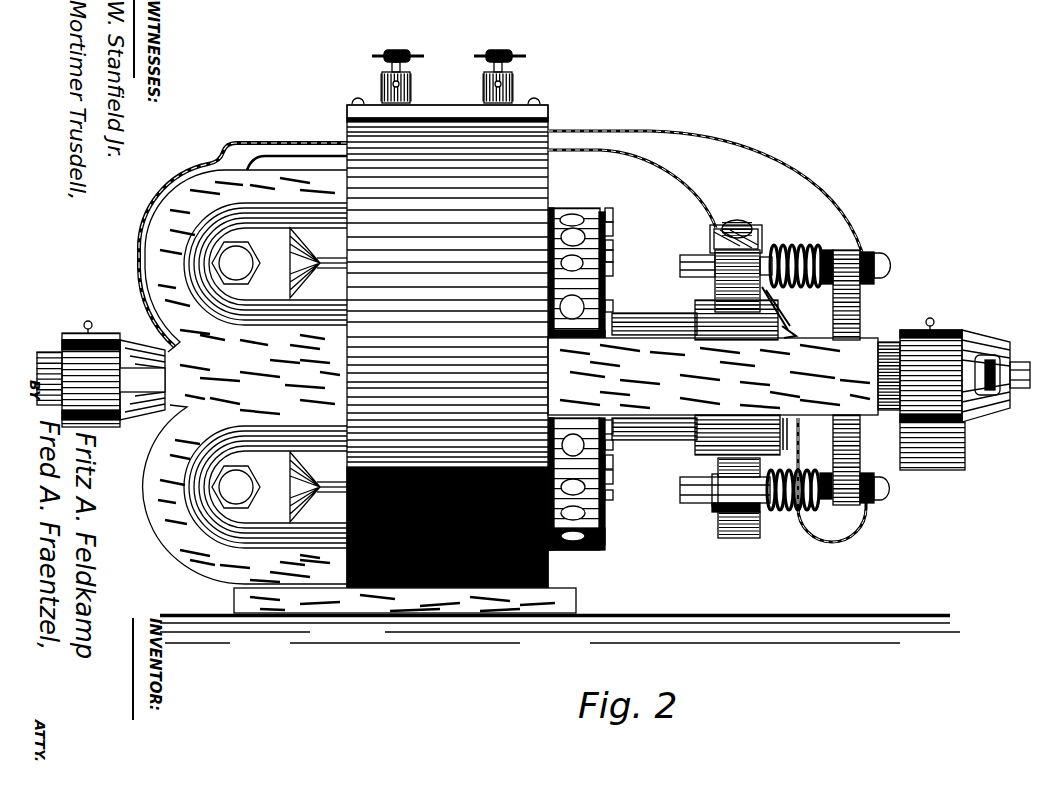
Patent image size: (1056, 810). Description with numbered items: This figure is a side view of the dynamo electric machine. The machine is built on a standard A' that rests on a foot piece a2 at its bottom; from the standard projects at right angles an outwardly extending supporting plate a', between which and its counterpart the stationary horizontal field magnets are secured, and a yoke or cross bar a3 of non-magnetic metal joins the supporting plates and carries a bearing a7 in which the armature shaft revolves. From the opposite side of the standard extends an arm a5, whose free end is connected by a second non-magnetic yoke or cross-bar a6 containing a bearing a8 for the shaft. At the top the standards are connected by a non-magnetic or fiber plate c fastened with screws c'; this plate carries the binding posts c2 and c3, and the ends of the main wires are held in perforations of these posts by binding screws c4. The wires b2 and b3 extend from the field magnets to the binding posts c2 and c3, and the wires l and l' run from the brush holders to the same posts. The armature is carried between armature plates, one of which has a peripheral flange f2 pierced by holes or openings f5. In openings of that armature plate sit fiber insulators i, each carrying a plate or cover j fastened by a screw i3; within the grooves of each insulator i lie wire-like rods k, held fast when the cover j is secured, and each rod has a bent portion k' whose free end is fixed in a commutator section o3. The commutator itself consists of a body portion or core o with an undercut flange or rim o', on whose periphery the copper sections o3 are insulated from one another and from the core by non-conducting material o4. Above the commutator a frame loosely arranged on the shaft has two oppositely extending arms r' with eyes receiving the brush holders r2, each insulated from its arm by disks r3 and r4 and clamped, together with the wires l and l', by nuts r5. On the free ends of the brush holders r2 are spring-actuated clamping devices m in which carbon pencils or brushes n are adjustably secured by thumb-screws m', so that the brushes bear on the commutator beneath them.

The standard A' is at (447, 346).
The supporting plate a' is at (249, 380).
The foot piece a2 is at (577, 602).
The yoke or cross bar a3 is at (101, 380).
The arm a5 is at (713, 376).
The yoke or cross-bar a6 is at (921, 394).
The bearing a7 is at (62, 345).
The bearing a8 is at (990, 415).
The wire b2 is at (298, 155).
The wire b3 is at (185, 157).
The non-magnetic or fiber plate c is at (447, 101).
The screw c' is at (451, 90).
The binding post c2 is at (412, 88).
The binding post c3 is at (488, 87).
The binding screw c4 is at (412, 75).
The peripheral flange f2 is at (600, 212).
The holes or openings f5 is at (573, 212).
The insulator i is at (613, 233).
The screw i3 is at (613, 244).
The plate or cover j is at (613, 215).
The wire-like rod k is at (621, 281).
The bent portion k' is at (654, 374).
The wire l is at (705, 188).
The wire l' is at (707, 363).
The spring-actuated clamping device m is at (744, 383).
The thumb-screw m' is at (741, 215).
The brush n is at (738, 548).
The body portion or core o is at (728, 369).
The undercut flange or rim o' is at (789, 371).
The commutator section o3 is at (758, 340).
The non-conducting material o4 is at (720, 340).
The arm r' is at (857, 377).
The brush holder r2 is at (700, 255).
The insulating disk r3 is at (868, 252).
The insulating disk r4 is at (828, 250).
The nut r5 is at (890, 265).